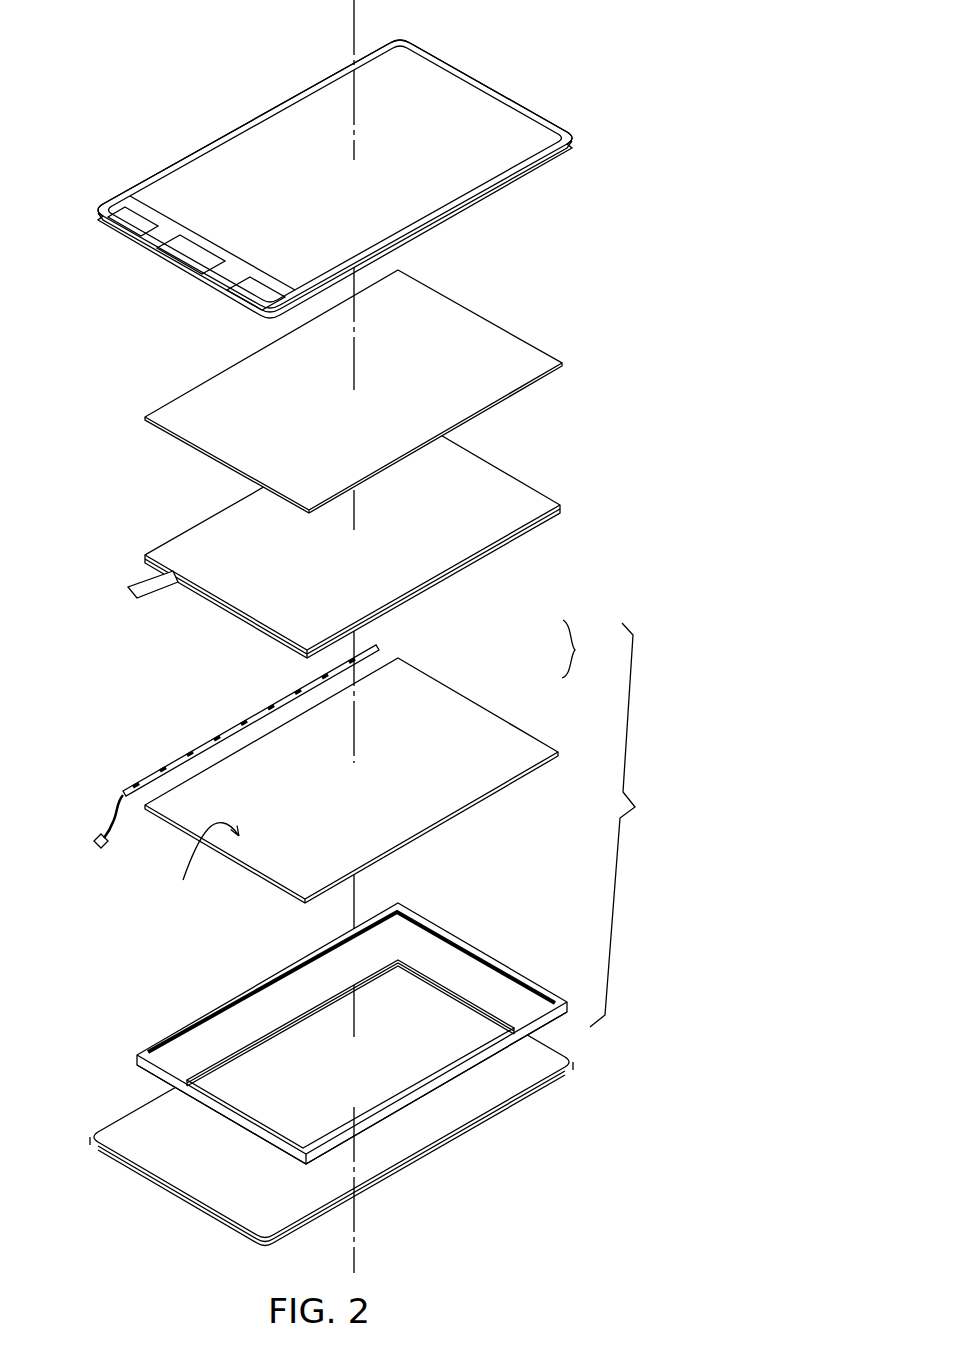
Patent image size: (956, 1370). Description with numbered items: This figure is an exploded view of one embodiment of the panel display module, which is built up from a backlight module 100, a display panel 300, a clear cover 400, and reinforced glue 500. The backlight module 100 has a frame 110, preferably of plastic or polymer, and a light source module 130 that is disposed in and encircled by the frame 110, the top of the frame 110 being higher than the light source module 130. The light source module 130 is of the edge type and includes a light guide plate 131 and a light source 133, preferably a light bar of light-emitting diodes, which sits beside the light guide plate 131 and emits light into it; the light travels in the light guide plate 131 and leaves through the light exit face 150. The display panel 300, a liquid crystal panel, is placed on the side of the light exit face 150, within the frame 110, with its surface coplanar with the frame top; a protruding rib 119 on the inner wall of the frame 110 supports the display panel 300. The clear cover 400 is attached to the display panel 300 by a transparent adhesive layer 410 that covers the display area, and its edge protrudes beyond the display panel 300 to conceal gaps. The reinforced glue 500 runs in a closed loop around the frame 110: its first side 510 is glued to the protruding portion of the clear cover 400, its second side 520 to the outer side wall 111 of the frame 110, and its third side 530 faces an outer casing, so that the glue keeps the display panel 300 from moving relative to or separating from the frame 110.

The backlight module 100 is at (634, 825).
The frame 110 is at (482, 1060).
The outer side wall 111 is at (424, 1100).
The protruding rib 119 is at (158, 1042).
The light source module 130 is at (590, 649).
The light guide plate 131 is at (452, 707).
The light source 133 is at (377, 647).
The light exit face 150 is at (200, 869).
The display panel 300 is at (560, 510).
The clear cover 400 is at (560, 157).
The transparent adhesive layer 410 is at (490, 320).
The reinforced glue 500 is at (132, 1112).
The first side 510 is at (481, 989).
The second side 520 is at (447, 990).
The third side 530 is at (387, 1177).